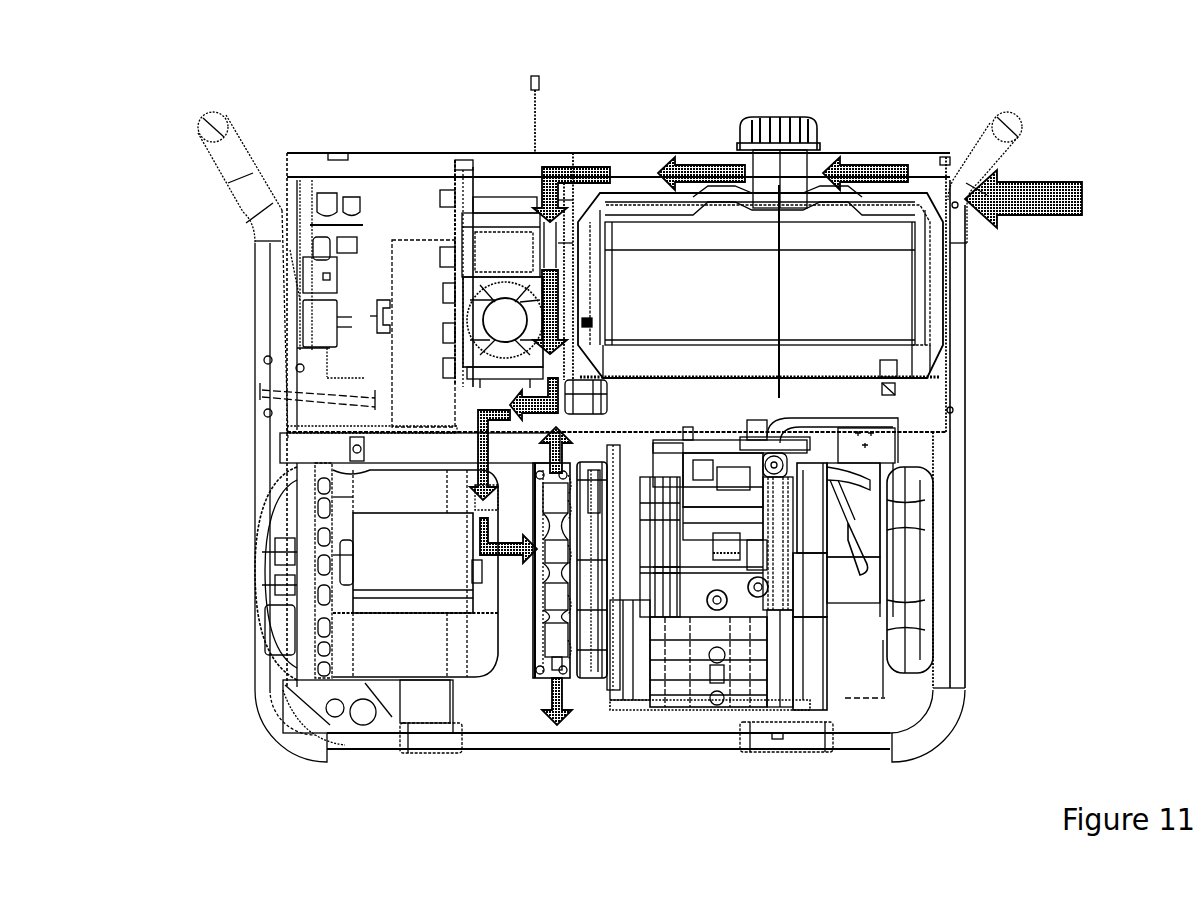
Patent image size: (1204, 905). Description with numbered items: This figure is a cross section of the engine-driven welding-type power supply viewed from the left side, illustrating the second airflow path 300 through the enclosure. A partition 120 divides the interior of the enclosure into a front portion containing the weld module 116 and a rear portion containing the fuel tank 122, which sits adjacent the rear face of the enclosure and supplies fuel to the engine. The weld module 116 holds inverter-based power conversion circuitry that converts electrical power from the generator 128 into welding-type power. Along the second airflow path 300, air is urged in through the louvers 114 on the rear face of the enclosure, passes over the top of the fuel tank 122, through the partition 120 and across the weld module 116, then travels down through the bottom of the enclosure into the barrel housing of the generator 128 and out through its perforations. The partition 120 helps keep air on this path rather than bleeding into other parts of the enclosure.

The louvers 114 is at (954, 164).
The weld module 116 is at (448, 190).
The partition 120 is at (572, 257).
The fuel tank 122 is at (833, 313).
The generator 128 is at (350, 527).
The second airflow path 300 is at (837, 165).